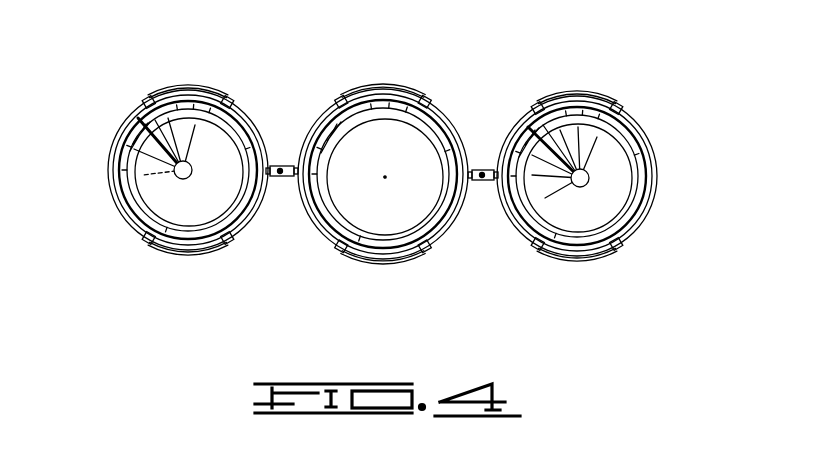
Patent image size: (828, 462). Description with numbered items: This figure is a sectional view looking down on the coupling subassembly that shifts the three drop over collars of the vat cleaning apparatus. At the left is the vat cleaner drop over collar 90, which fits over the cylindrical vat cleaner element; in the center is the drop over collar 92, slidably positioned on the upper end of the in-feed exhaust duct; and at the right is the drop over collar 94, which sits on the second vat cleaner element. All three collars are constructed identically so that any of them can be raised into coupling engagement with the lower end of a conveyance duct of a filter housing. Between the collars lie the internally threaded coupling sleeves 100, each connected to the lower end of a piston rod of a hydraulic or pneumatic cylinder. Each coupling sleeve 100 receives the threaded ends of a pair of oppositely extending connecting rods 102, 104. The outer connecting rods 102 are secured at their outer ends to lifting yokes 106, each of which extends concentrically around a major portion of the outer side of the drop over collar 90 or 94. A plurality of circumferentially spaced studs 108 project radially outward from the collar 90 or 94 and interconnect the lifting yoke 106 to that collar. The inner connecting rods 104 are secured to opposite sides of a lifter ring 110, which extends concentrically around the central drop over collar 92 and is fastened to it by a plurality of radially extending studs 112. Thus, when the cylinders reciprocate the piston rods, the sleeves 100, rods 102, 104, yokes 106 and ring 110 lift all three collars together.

The vat cleaner drop over collar 90 is at (130, 213).
The drop over collar 92 is at (375, 240).
The drop over collar 94 is at (645, 167).
The internally threaded coupling sleeve 100 is at (275, 165).
The connecting rod 102 is at (271, 180).
The connecting rod 104 is at (297, 165).
The lifting yoke 106 is at (177, 90).
The stud 108 is at (150, 101).
The lifter ring 110 is at (378, 90).
The stud 112 is at (364, 98).